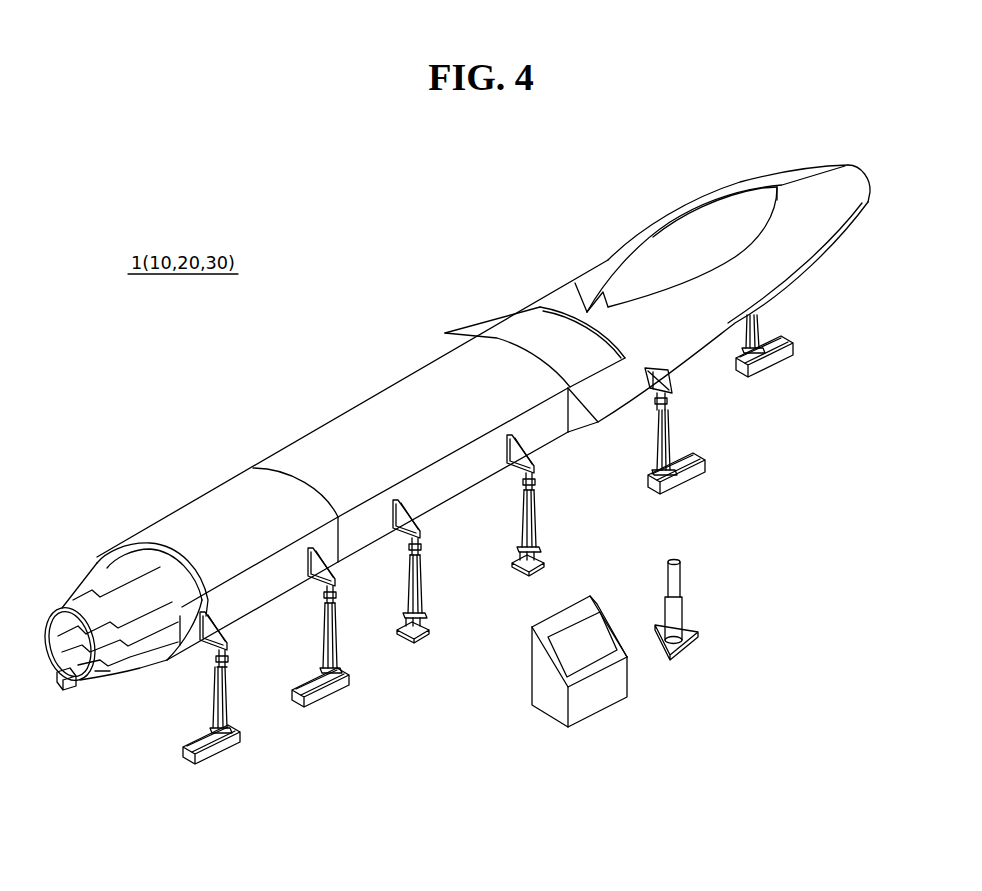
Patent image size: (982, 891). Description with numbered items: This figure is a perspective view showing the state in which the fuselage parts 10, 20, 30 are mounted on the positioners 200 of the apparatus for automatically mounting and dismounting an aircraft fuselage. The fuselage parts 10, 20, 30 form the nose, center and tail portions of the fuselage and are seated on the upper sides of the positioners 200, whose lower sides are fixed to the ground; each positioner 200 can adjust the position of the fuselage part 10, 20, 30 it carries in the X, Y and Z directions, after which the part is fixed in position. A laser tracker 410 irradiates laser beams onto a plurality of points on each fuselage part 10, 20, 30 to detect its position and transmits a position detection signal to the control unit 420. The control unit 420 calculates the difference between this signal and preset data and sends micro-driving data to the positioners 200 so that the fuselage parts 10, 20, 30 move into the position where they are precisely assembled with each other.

The fuselage part 10 is at (688, 202).
The fuselage part 20 is at (371, 398).
The fuselage part 30 is at (202, 497).
The positioner 200 is at (214, 690).
The laser tracker 410 is at (678, 612).
The control unit 420 is at (544, 681).